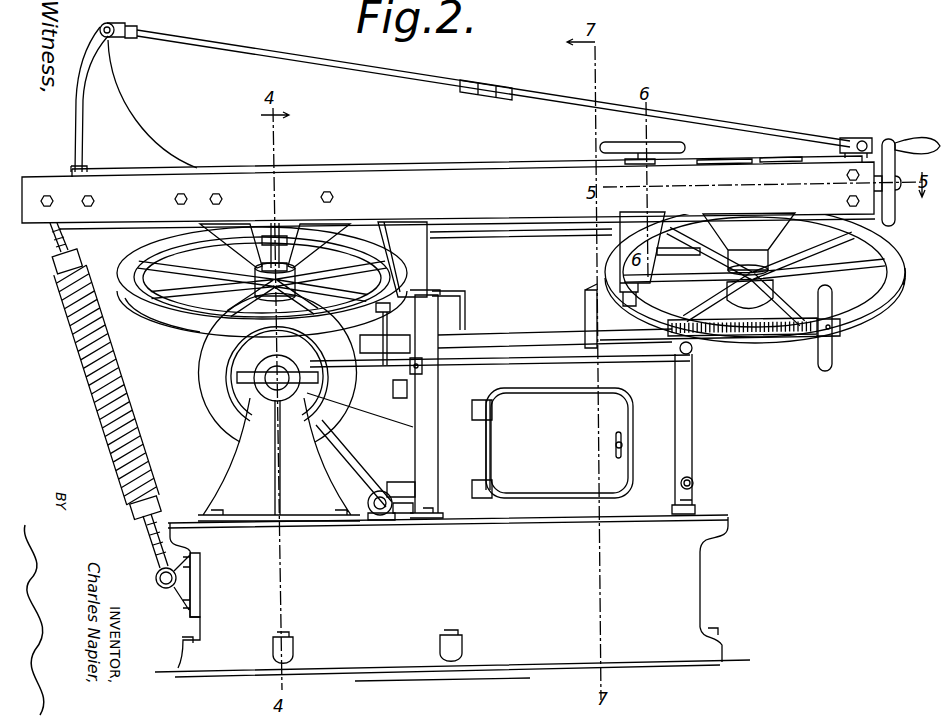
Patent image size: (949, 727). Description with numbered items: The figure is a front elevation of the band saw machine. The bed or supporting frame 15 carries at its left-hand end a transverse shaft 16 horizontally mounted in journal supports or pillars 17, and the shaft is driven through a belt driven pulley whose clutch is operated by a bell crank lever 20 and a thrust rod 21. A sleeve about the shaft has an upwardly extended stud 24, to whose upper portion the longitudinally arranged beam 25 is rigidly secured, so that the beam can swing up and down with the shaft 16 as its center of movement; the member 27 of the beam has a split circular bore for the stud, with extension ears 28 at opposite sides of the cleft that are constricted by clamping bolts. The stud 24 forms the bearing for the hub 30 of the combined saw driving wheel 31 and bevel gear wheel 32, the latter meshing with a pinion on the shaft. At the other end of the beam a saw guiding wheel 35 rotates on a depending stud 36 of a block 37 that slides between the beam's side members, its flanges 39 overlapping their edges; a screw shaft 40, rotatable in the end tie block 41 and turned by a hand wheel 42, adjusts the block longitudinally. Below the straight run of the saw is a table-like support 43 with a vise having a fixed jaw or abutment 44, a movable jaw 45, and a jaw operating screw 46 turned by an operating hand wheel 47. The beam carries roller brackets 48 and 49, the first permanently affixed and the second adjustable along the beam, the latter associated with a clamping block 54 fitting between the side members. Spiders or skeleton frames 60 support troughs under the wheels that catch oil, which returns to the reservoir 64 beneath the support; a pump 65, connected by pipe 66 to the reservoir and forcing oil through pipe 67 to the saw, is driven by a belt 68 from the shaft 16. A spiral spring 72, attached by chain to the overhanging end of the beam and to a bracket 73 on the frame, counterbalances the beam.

The bed or supporting frame 15 is at (452, 598).
The transverse shaft 16 is at (262, 383).
The journal supports or pillars 17 is at (279, 459).
The bell crank lever 20 is at (396, 368).
The thrust rod 21 is at (558, 364).
The stud 24 is at (278, 223).
The beam 25 is at (448, 197).
The part or member 27 is at (288, 250).
The extension ears 28 is at (295, 262).
The hub 30 is at (300, 286).
The saw driving wheel 31 is at (145, 262).
The bevel gear wheel 32 is at (172, 305).
The saw guiding wheel 35 is at (876, 266).
The depending stud 36 is at (752, 222).
The block 37 is at (504, 94).
The flanges 39 is at (707, 222).
The screw shaft 40 is at (902, 177).
The end tie block 41 is at (866, 216).
The hand wheel 42 is at (899, 182).
The table-like support 43 is at (538, 350).
The fixed jaw or abutment 44 is at (445, 321).
The movable jaw 45 is at (588, 309).
The jaw operating screw 46 is at (765, 337).
The operating hand wheel 47 is at (832, 350).
The bracket 48 is at (402, 259).
The bracket 49 is at (642, 259).
The clamping block 54 is at (618, 163).
The spiders or skeleton frames 60 is at (222, 300).
The reservoir 64 is at (542, 443).
The pump 65 is at (370, 514).
The pipe 66 is at (400, 521).
The pipe 67 is at (398, 482).
The belt 68 is at (350, 458).
The spiral spring 72 is at (104, 412).
The bracket 73 is at (180, 592).